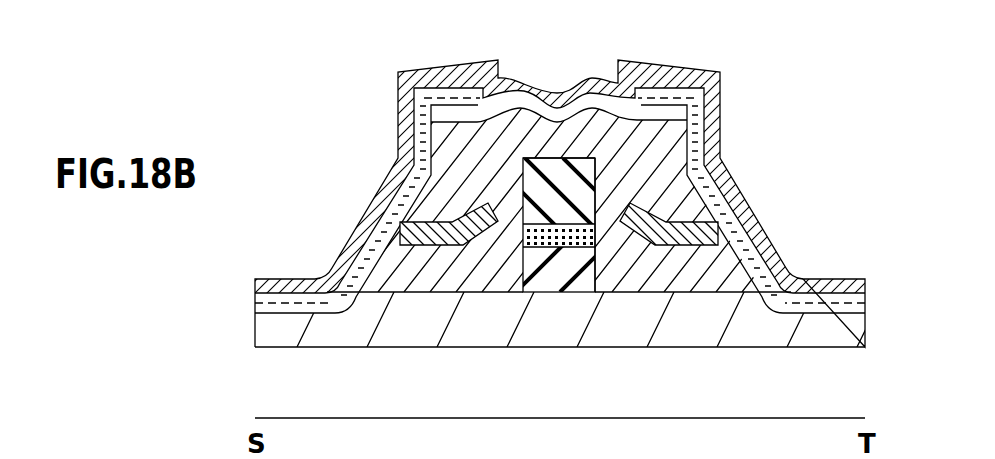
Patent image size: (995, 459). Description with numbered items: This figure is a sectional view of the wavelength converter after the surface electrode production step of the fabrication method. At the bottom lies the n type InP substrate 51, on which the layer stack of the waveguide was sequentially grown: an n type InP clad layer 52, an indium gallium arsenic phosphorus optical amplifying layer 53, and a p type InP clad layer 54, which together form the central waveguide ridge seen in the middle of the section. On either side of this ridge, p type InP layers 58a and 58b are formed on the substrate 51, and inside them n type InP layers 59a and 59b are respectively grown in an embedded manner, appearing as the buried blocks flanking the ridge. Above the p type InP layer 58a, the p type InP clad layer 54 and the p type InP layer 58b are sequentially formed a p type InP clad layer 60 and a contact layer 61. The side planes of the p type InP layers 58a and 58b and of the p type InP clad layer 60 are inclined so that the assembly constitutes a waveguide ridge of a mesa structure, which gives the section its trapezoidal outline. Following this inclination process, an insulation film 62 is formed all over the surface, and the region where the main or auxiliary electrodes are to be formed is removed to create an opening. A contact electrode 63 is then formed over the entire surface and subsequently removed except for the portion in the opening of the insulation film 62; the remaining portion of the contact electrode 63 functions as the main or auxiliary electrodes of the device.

The n type InP substrate 51 is at (348, 333).
The n type InP clad layer 52 is at (568, 265).
The optical amplifying layer 53 is at (612, 199).
The p type InP clad layer 54 is at (575, 190).
The p type InP layer 58a is at (427, 273).
The p type InP layer 58b is at (692, 275).
The n type InP layer 59a is at (402, 233).
The n type InP layer 59b is at (702, 235).
The p type InP clad layer 60 is at (433, 147).
The contact layer 61 is at (443, 112).
The insulation film 62 is at (394, 219).
The contact electrode 63 is at (398, 93).